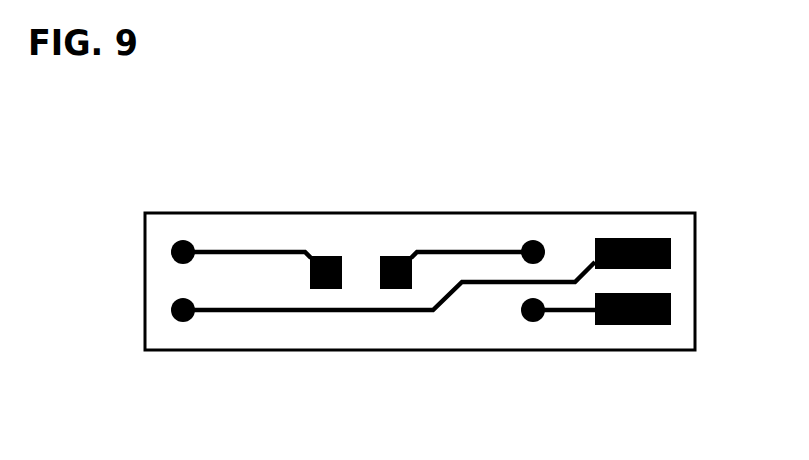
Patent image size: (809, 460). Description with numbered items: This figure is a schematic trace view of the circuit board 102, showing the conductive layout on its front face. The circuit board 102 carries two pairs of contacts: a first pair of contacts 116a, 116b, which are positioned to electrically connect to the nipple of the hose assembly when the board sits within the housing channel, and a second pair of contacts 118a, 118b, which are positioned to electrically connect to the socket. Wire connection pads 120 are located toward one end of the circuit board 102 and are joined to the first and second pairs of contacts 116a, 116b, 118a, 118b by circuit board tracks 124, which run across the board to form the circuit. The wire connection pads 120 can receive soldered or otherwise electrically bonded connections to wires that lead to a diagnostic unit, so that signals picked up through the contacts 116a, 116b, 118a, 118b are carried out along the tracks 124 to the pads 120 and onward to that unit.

The circuit board 102 is at (742, 122).
The first contact 116a is at (183, 252).
The first contact 116b is at (183, 310).
The second contact 118a is at (533, 252).
The second contact 118b is at (533, 310).
The wire connection pads 120 is at (635, 240).
The circuit board tracks 124 is at (254, 252).